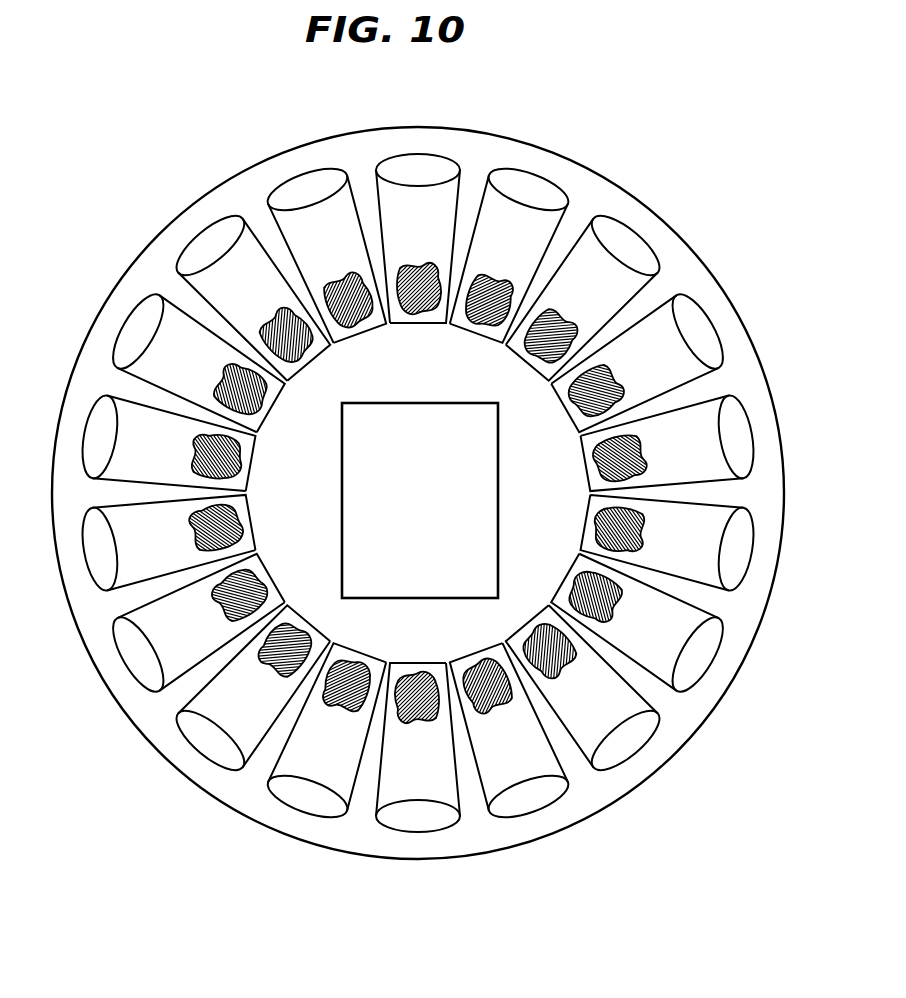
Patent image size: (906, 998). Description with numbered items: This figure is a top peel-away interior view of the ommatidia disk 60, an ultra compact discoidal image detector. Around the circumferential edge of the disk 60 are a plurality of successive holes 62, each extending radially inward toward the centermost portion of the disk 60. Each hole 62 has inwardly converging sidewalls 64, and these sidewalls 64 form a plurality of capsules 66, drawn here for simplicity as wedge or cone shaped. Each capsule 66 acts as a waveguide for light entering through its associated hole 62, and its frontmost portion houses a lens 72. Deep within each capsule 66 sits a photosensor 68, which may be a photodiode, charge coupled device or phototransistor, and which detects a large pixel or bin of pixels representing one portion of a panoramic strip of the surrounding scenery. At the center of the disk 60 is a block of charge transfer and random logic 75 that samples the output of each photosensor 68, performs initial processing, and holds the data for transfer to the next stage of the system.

The ommatidia disk 60 is at (718, 278).
The hole 62 is at (193, 240).
The inwardly converging sidewalls 64 is at (158, 288).
The capsule 66 is at (417, 203).
The photosensor 68 is at (566, 330).
The lens 72 is at (440, 167).
The A/D converters and random logic 75 is at (498, 513).